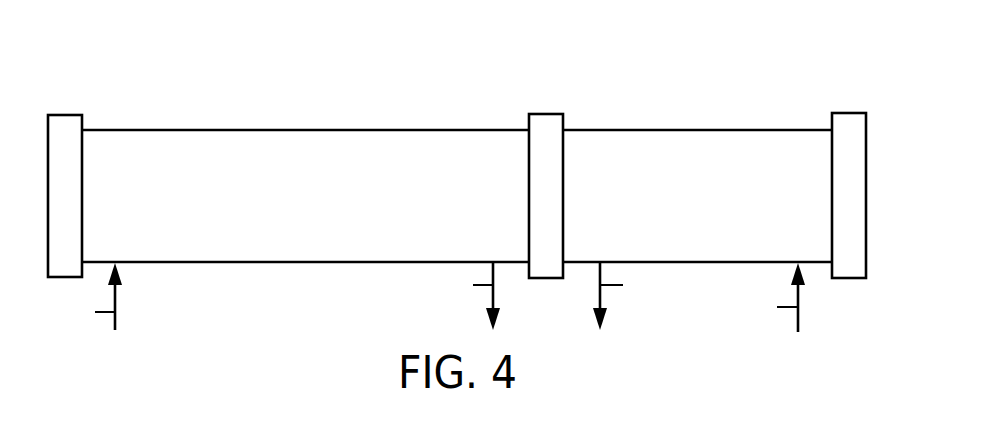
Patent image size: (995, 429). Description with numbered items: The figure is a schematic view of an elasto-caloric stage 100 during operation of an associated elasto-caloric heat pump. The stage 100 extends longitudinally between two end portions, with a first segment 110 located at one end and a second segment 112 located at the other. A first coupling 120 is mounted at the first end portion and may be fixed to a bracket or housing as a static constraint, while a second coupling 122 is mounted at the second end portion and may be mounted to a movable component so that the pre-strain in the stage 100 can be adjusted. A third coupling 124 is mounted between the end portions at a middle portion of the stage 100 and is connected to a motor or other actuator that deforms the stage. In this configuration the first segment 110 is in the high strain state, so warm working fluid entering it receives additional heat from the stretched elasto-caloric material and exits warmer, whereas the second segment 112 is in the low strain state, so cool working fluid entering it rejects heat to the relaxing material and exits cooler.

The elasto-caloric stage 100 is at (104, 91).
The first segment 110 is at (302, 160).
The second segment 112 is at (702, 160).
The first coupling 120 is at (65, 215).
The second coupling 122 is at (847, 203).
The third coupling 124 is at (545, 207).